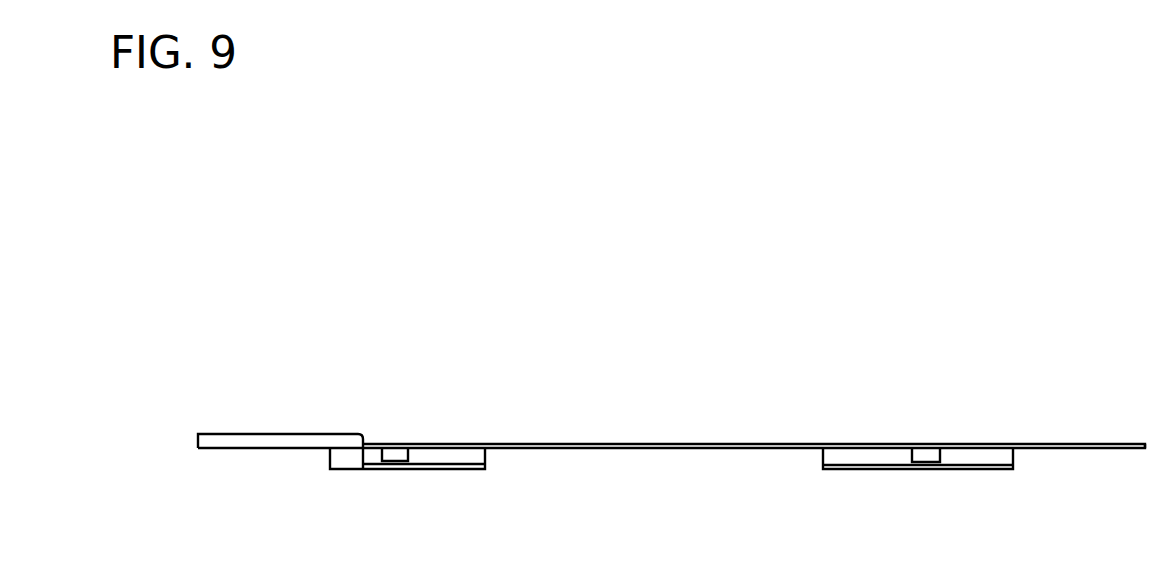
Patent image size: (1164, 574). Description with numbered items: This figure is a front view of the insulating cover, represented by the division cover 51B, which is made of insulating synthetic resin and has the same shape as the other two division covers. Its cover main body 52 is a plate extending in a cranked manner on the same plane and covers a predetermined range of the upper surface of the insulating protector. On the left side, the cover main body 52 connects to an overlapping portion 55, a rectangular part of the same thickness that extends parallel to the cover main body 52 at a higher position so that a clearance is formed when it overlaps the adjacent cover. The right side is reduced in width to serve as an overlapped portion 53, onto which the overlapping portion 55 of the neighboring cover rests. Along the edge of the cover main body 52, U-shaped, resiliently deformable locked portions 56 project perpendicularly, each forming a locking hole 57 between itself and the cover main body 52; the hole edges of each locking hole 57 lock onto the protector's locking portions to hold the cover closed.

The division cover 51B is at (640, 333).
The cover main body 52 is at (680, 443).
The overlapped portion 53 is at (1107, 444).
The overlapping portion 55 is at (252, 433).
The locked portion 56 is at (448, 462).
The locking hole 57 is at (407, 455).